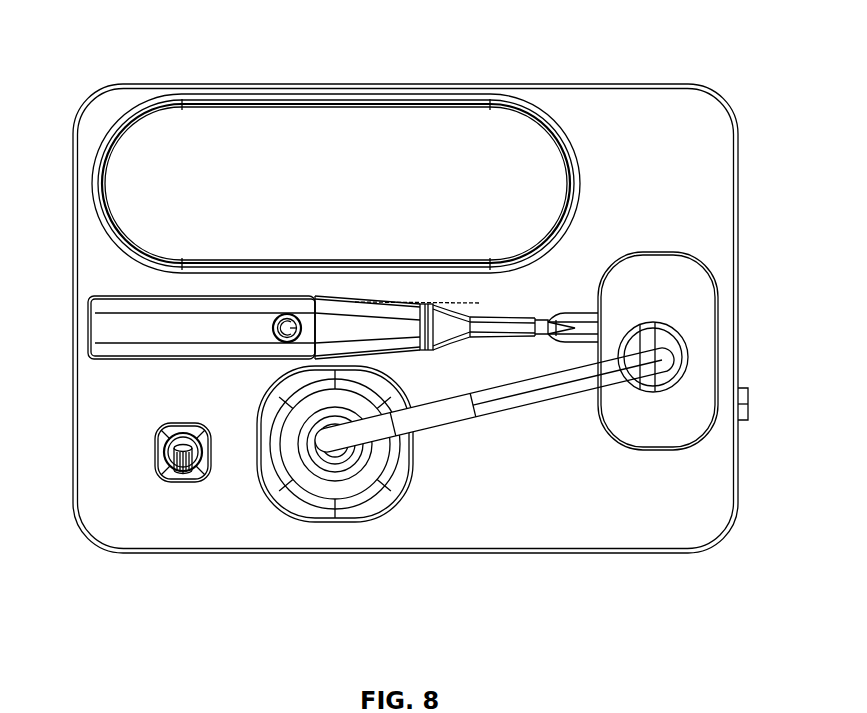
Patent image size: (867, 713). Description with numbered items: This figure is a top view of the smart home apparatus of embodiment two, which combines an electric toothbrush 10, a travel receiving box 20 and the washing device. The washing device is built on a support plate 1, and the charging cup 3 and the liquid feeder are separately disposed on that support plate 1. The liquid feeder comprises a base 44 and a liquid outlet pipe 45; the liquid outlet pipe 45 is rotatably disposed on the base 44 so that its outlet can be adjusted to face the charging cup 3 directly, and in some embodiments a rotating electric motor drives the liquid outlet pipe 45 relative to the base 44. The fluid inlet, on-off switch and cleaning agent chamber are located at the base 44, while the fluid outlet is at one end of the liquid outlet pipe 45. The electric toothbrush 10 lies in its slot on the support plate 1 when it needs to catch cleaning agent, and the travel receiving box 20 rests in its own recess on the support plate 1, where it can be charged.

The support plate 1 is at (182, 533).
The travel receiving box 20 is at (250, 160).
The electric toothbrush 10 is at (132, 326).
The charging cup 3 is at (345, 487).
The liquid outlet pipe 45 is at (433, 410).
The base 44 is at (677, 292).